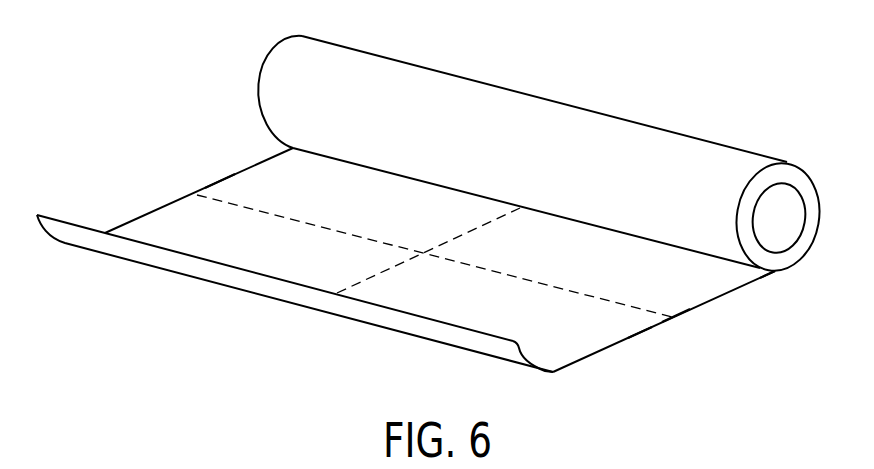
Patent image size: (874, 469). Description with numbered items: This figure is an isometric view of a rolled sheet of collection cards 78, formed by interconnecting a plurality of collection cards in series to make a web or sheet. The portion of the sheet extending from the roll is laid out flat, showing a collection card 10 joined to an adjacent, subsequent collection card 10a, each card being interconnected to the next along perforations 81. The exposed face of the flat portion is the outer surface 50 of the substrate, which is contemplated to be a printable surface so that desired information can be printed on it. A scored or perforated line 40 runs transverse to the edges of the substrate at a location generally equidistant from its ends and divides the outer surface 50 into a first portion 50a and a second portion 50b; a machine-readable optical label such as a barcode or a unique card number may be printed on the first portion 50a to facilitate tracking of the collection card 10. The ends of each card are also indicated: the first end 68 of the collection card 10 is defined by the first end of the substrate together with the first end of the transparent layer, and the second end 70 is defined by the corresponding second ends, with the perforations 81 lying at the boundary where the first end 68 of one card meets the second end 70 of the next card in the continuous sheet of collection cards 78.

The collection card 10 is at (449, 258).
The subsequent collection card 10a is at (728, 298).
The perforated line 40 is at (465, 237).
The outer surface 50 is at (672, 306).
The first portion of outer surface 50a is at (163, 222).
The second portion of outer surface 50b is at (570, 352).
The first end of collection card 68 is at (125, 225).
The second end of collection card 70 is at (639, 334).
The sheet of collection cards 78 is at (788, 163).
The perforations 81 is at (223, 200).